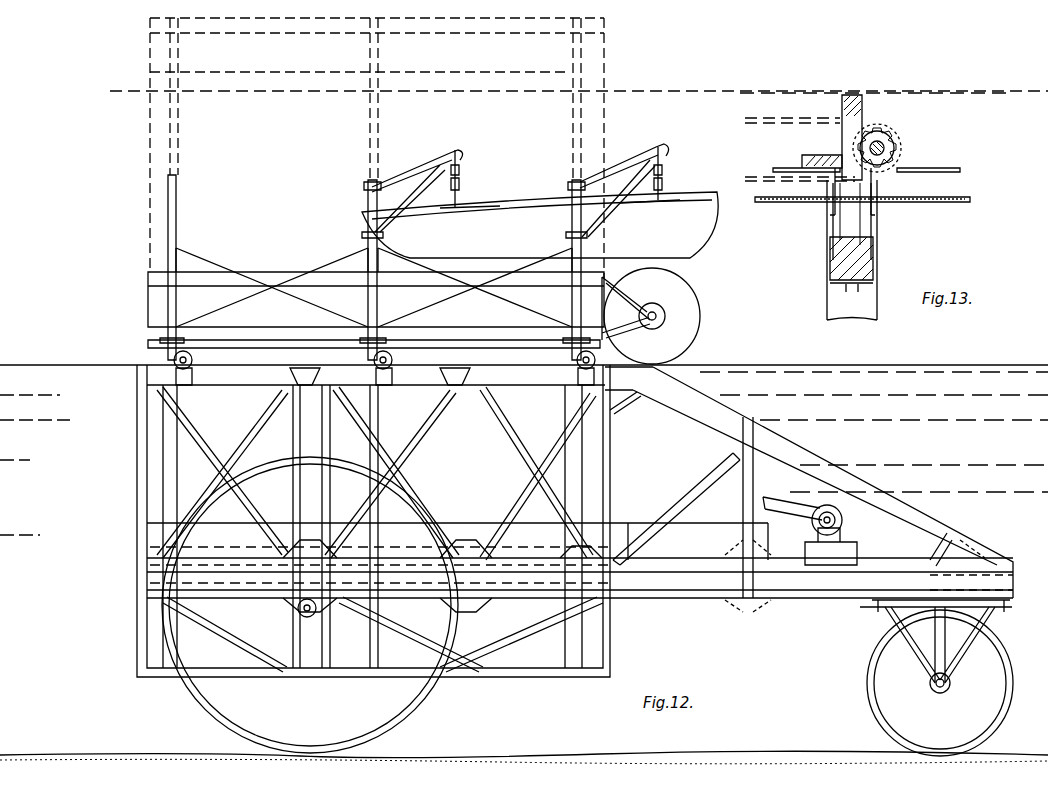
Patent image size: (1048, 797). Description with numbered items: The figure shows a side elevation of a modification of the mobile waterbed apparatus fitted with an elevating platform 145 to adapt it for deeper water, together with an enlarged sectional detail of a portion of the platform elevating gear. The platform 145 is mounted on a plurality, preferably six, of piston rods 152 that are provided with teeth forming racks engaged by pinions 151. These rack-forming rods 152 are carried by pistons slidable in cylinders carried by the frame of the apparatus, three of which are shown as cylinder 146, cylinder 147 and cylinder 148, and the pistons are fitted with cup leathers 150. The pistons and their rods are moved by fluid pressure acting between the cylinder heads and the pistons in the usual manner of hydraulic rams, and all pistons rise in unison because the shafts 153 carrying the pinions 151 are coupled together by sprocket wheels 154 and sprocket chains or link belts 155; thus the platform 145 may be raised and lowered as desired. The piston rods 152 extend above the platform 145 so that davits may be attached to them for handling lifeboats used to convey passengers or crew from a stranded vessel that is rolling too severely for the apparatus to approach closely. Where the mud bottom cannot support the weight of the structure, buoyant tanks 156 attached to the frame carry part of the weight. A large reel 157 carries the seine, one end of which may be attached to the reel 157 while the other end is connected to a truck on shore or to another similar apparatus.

In FIG. 12, the platform 145 is at (376, 183).
In FIG. 12, the cylinder 146 is at (575, 521).
In FIG. 12, the cylinder 147 is at (378, 418).
In FIG. 13, the cylinder 147 is at (852, 244).
In FIG. 12, the cylinder 148 is at (583, 460).
In FIG. 13, the cup leathers 150 is at (830, 290).
In FIG. 12, the pinions 151 is at (194, 360).
In FIG. 13, the pinions 151 is at (900, 140).
In FIG. 12, the piston rods 152 is at (168, 305).
In FIG. 13, the piston rods 152 is at (862, 115).
In FIG. 12, the shafts 153 is at (176, 368).
In FIG. 13, the shafts 153 is at (885, 147).
In FIG. 12, the sprocket wheels 154 is at (195, 347).
In FIG. 13, the sprocket wheels 154 is at (891, 135).
In FIG. 13, the sprocket chains 155 is at (862, 152).
In FIG. 12, the buoyant tanks 156 is at (767, 531).
In FIG. 12, the reel 157 is at (651, 316).